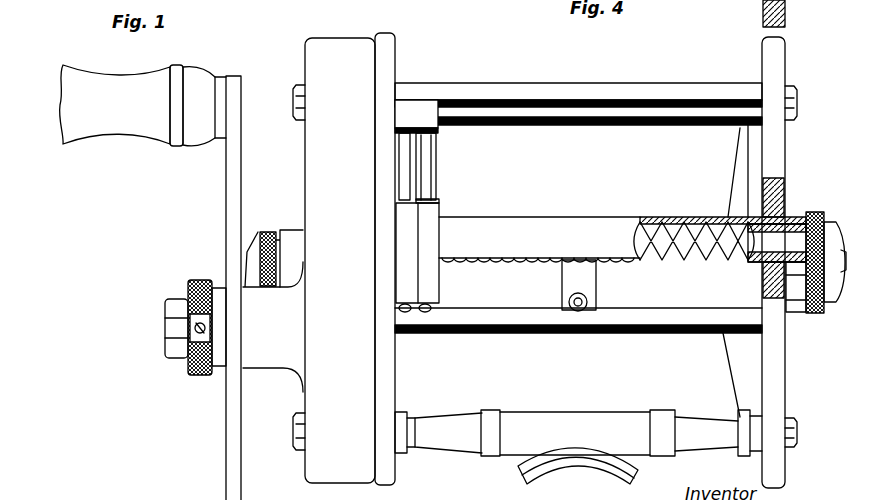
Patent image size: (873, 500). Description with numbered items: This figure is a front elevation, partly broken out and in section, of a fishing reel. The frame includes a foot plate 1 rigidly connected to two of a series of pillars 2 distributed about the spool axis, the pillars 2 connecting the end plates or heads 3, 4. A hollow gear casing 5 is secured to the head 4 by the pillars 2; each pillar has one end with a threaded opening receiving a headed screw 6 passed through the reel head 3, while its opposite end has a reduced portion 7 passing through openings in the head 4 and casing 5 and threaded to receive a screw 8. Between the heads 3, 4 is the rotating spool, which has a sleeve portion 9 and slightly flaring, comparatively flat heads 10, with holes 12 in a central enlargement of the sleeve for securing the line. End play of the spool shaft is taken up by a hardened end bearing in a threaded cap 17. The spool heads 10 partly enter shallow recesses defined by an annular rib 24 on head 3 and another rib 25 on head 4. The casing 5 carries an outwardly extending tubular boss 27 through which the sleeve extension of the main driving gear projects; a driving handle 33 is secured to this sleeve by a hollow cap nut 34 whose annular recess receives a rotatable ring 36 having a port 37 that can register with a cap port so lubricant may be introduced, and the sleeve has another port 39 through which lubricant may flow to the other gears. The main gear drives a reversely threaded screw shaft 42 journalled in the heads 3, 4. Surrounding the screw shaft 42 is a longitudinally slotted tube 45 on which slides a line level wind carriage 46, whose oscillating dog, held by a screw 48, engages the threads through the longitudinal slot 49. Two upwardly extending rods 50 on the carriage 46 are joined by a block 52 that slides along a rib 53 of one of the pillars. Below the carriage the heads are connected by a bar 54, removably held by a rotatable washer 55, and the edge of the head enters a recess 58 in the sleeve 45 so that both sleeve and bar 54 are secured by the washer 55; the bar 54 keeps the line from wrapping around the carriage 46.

The foot plate 1 is at (568, 468).
The pillars 2 is at (470, 440).
The end plate or head 3 is at (786, 163).
The end plate or head 4 is at (388, 48).
The gear casing 5 is at (333, 52).
The headed screw 6 is at (796, 92).
The reduced portion 7 is at (437, 83).
The screw 8 is at (295, 92).
The sleeve portion 9 is at (538, 293).
The spool heads 10 is at (418, 364).
The holes 12 is at (578, 312).
The threaded cap 17 is at (818, 314).
The rib 24 is at (752, 385).
The rib 25 is at (405, 396).
The tubular boss 27 is at (273, 358).
The driving handle 33 is at (231, 184).
The hollow cap nut 34 is at (220, 362).
The rotatable ring 36 is at (200, 370).
The port 37 is at (190, 300).
The port 39 is at (389, 7).
The reversely threaded screw shaft 42 is at (655, 250).
The longitudinally slotted tube 45 is at (611, 232).
The line level wind carriage 46 is at (440, 212).
The screw 48 is at (440, 303).
The longitudinal slot 49 is at (635, 265).
The upwardly extending rods 50 is at (648, 90).
The block 52 is at (440, 100).
The rib 53 is at (631, 118).
The bar 54 is at (633, 325).
The rotatable washer 55 is at (797, 315).
The recess 58 is at (770, 272).